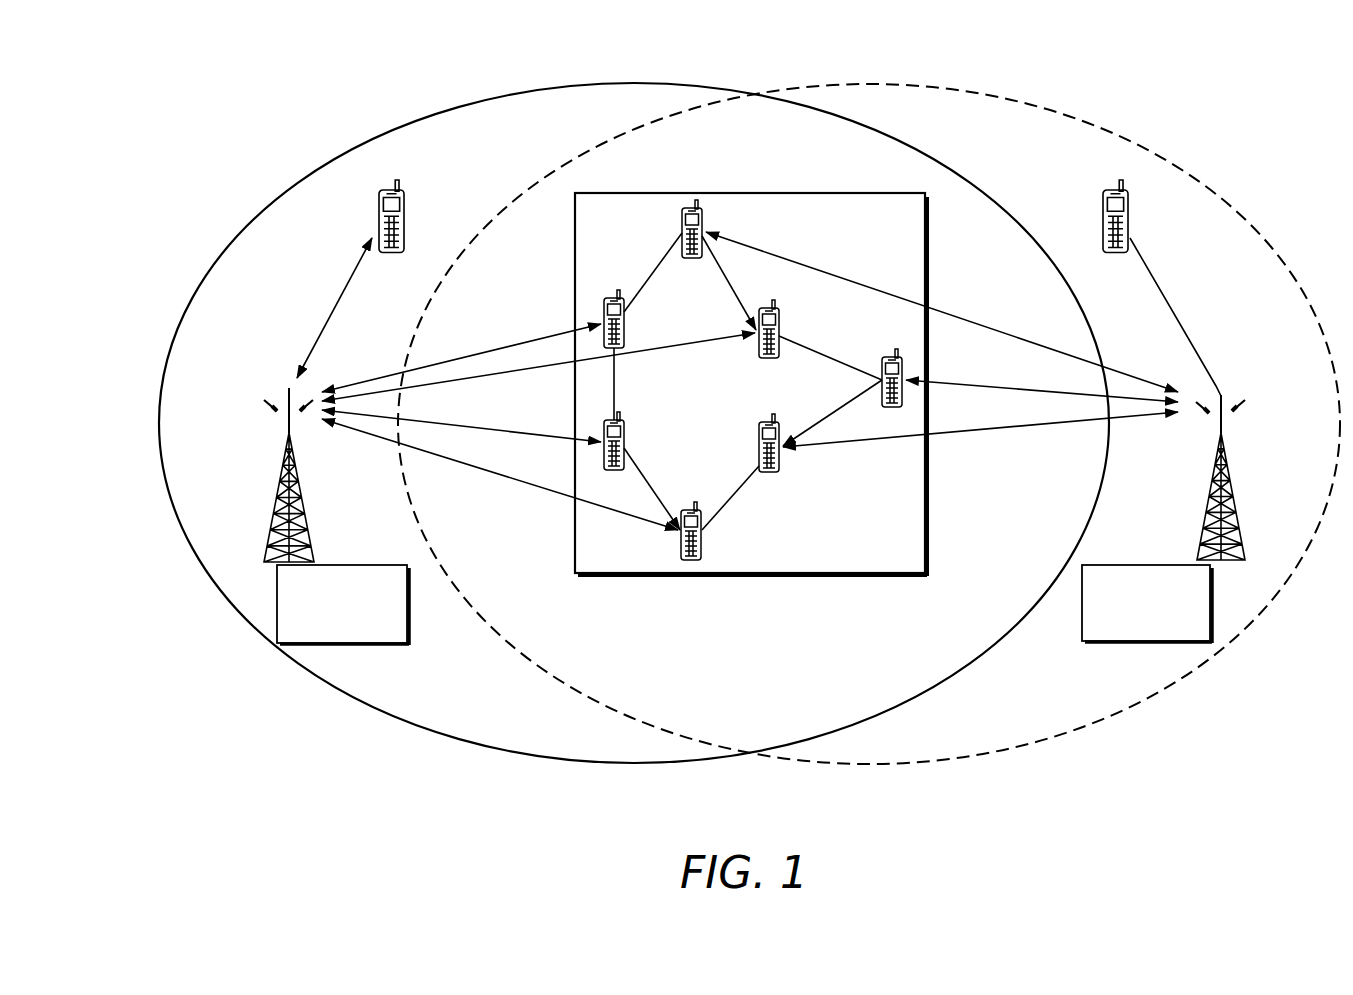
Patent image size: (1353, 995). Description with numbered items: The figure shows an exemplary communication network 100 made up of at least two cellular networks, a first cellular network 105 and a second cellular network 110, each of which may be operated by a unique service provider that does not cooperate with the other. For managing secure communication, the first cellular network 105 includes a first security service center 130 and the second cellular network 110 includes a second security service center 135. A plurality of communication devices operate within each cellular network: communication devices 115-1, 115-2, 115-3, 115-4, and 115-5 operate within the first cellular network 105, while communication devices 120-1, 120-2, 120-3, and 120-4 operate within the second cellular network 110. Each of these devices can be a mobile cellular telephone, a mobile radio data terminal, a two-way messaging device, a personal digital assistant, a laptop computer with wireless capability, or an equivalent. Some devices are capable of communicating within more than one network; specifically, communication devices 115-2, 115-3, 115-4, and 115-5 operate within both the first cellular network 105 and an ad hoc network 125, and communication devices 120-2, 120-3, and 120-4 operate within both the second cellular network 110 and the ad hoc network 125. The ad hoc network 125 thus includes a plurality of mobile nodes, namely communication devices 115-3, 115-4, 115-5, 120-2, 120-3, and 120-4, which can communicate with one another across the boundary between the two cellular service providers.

The communication network 100 is at (203, 143).
The first cellular network 105 is at (610, 83).
The second cellular network 110 is at (864, 84).
The communication device 115-1 is at (405, 205).
The communication device 115-2 is at (770, 306).
The communication device 115-3 is at (625, 326).
The communication device 115-4 is at (625, 432).
The communication device 115-5 is at (702, 540).
The communication device 120-1 is at (1129, 208).
The communication device 120-2 is at (681, 218).
The communication device 120-3 is at (893, 355).
The communication device 120-4 is at (780, 453).
The ad hoc network 125 is at (893, 193).
The first security service center 130 is at (336, 565).
The second security service center 135 is at (1141, 565).